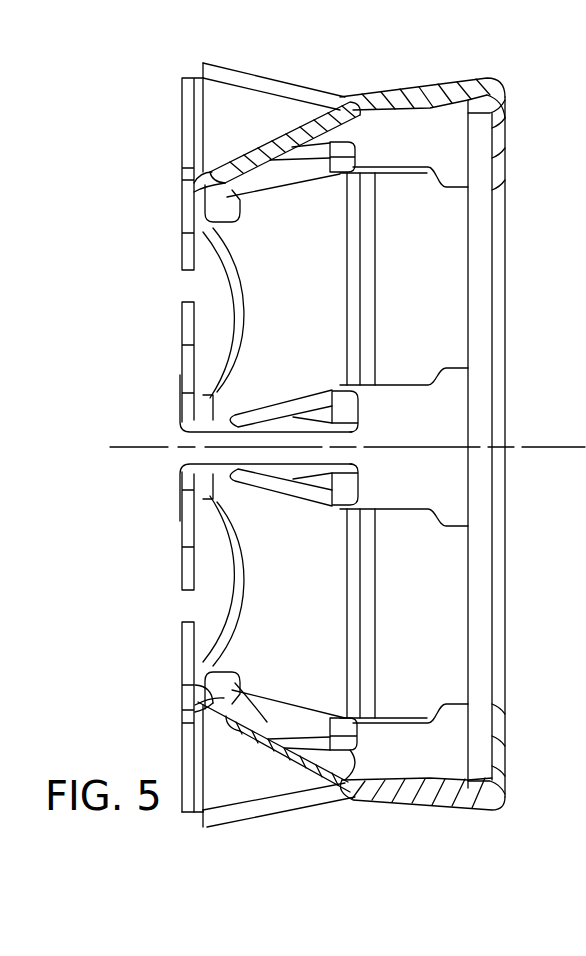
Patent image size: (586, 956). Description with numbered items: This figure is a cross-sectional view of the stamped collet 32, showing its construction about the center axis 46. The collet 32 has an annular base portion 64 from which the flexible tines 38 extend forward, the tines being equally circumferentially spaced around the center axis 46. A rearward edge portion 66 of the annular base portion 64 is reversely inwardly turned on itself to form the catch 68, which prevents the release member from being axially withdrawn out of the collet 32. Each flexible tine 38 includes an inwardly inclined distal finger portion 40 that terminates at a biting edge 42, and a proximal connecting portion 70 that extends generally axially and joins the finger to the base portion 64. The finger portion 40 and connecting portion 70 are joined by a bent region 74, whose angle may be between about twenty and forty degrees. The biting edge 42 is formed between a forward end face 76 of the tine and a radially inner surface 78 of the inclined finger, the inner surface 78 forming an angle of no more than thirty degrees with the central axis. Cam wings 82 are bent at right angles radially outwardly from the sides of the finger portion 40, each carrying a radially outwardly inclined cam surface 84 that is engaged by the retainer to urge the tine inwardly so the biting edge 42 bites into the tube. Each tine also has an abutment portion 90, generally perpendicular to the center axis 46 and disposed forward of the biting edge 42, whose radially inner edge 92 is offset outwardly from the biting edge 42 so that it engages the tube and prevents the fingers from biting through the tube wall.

The collet 32 is at (468, 64).
The flexible tines 38 is at (258, 140).
The inwardly inclined distal finger portion 40 is at (186, 204).
The biting edge 42 is at (247, 323).
The center axis 46 is at (176, 446).
The annular base portion 64 is at (503, 693).
The rearward edge portion 66 is at (465, 790).
The catch 68 is at (446, 803).
The connecting portion 70 is at (452, 645).
The bent region 74 is at (348, 95).
The forward end face 76 is at (224, 727).
The inner surface 78 is at (186, 692).
The cam wings 82 is at (243, 822).
The cam surface 84 is at (258, 66).
The abutment portion 90 is at (181, 127).
The radially inner edge 92 is at (186, 190).